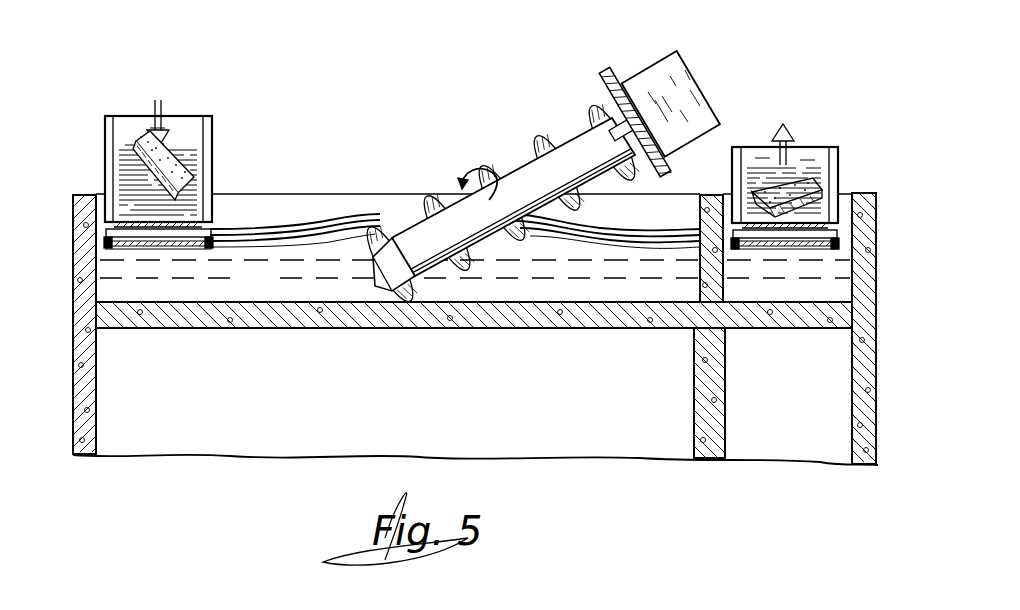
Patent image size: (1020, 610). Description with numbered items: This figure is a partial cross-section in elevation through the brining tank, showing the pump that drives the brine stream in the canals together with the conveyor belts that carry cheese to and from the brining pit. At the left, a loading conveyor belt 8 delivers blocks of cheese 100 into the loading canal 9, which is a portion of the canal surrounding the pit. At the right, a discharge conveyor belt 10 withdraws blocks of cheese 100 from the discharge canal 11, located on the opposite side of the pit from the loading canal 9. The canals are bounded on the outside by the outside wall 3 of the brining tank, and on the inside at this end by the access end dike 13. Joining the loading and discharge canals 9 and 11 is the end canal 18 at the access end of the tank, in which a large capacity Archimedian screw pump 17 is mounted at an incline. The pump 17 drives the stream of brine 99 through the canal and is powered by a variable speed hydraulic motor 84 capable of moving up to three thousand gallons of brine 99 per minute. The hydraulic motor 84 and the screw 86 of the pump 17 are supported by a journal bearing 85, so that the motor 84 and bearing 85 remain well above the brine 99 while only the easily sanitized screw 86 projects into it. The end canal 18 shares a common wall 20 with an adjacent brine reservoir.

The outside wall 3 is at (866, 199).
The loading conveyor belt 8 is at (170, 129).
The loading canal 9 is at (134, 290).
The discharge conveyor belt 10 is at (768, 163).
The discharge canal 11 is at (820, 274).
The access end dike 13 is at (706, 195).
The Archimedian screw pump 17 is at (519, 153).
The end canal 18 is at (322, 193).
The common wall 20 is at (228, 204).
The hydraulic motor 84 is at (676, 68).
The journal bearing 85 is at (605, 72).
The screw 86 is at (466, 183).
The brine 99 is at (284, 278).
The blocks of cheese 100 is at (139, 136).